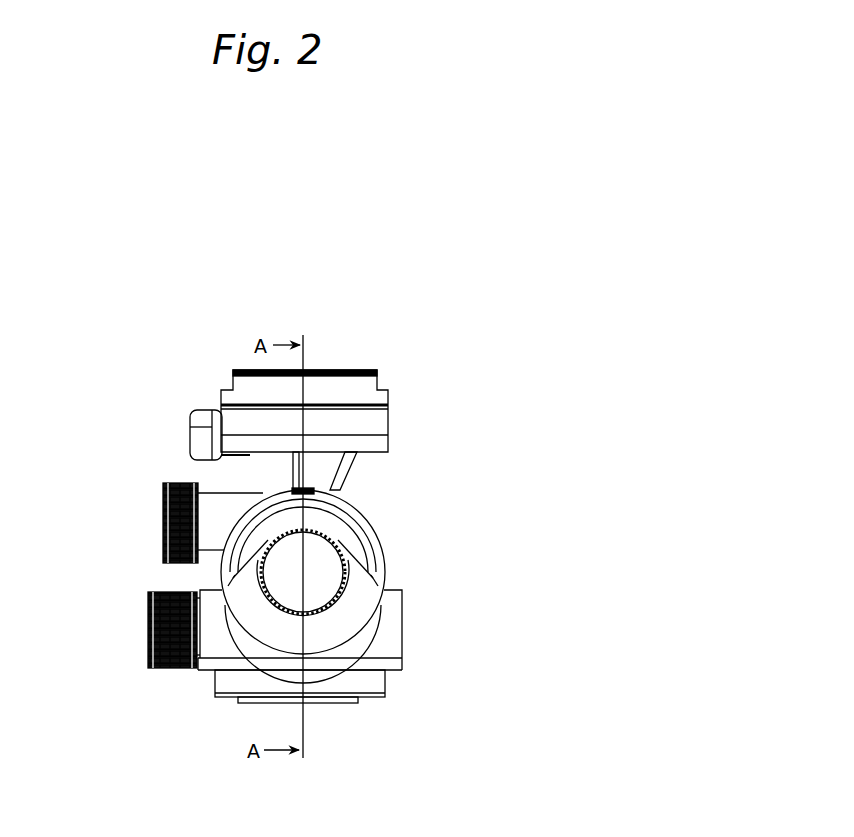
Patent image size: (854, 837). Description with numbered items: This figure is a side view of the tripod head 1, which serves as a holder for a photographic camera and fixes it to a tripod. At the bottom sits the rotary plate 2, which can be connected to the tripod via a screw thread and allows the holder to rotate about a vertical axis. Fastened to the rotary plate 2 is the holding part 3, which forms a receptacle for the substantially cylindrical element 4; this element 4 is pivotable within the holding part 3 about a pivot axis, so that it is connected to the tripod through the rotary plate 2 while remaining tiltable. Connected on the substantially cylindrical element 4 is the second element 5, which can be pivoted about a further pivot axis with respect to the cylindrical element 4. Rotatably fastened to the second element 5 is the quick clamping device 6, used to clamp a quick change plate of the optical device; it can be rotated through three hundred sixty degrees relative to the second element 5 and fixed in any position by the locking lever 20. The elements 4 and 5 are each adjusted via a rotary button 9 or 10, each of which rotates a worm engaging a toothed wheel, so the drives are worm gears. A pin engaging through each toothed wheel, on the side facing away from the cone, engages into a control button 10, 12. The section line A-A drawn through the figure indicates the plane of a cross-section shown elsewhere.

The tripod head 1 is at (480, 217).
The rotary plate 2 is at (398, 688).
The holding part 3 is at (408, 618).
The substantially cylindrical element 4 is at (382, 529).
The second element 5 is at (360, 468).
The quick clamping device 6 is at (400, 374).
The rotary button 9 is at (144, 627).
The rotary button 10 is at (322, 567).
The control button 12 is at (154, 514).
The locking lever 20 is at (187, 411).